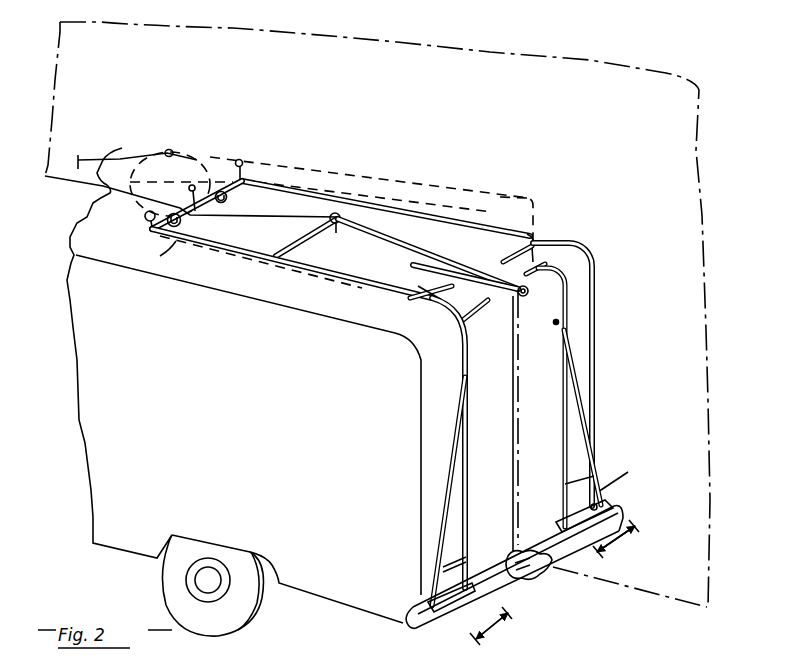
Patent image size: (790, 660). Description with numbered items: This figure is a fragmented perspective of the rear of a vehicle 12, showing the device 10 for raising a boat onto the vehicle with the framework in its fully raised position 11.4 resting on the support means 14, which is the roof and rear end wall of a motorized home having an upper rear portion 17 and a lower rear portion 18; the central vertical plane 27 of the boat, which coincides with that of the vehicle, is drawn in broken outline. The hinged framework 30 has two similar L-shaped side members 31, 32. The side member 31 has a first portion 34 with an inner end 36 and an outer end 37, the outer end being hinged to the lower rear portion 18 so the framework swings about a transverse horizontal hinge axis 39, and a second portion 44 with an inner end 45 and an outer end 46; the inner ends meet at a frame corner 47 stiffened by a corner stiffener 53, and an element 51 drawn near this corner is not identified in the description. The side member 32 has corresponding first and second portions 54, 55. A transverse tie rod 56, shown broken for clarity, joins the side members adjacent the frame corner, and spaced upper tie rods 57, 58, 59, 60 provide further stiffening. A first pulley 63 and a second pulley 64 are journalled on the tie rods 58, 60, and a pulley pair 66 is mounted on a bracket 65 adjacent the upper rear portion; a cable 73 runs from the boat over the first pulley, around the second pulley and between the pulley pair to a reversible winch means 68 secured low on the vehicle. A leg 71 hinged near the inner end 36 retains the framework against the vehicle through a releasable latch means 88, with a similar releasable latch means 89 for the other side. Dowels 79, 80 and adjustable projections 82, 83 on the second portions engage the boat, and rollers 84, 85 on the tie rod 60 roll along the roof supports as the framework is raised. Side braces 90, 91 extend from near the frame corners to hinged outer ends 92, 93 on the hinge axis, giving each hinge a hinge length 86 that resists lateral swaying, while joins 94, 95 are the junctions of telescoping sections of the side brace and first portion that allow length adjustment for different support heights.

The device 10 is at (608, 293).
The fully raised position of the boat 11.4 is at (446, 187).
The vehicle 12 is at (108, 426).
The support means 14 is at (290, 303).
The upper rear portion 17 is at (578, 263).
The lower rear portion 18 is at (608, 491).
The central vertical plane 27 is at (589, 83).
The hinged framework 30 is at (608, 373).
The side member 31 is at (460, 398).
The side member 32 is at (569, 325).
The first portion 34 is at (469, 468).
The inner end 36 is at (469, 351).
The outer end 37 is at (466, 562).
The hinge axis 39 is at (397, 622).
The second portion 44 is at (348, 289).
The inner end 45 is at (388, 295).
The outer end 46 is at (156, 237).
The frame corner 47 is at (470, 326).
The pivot link 51 is at (446, 320).
The corner stiffener 53 is at (420, 312).
The first portion 54 is at (566, 503).
The second portion 55 is at (428, 228).
The transverse tie rod 56 is at (413, 266).
The second upper tie rod 57 is at (529, 292).
The third upper tie rod 58 is at (303, 256).
The fourth upper tie rod 59 is at (285, 253).
The fifth upper tie rod 60 is at (166, 255).
The first pulley 63 is at (196, 214).
The second pulley 64 is at (329, 220).
The bracket 65 is at (498, 320).
The pulley pair 66 is at (503, 263).
The reversible winch means 68 is at (530, 578).
The leg 71 is at (469, 368).
The cable 73 is at (519, 473).
The dowel 79 is at (277, 258).
The dowel 80 is at (397, 182).
The projection 82 is at (145, 224).
The projection 83 is at (248, 168).
The roller 84 is at (156, 255).
The roller 85 is at (229, 200).
The hinge length 86 is at (498, 629).
The releasable latch means 88 is at (460, 366).
The releasable latch means 89 is at (556, 324).
The side brace 90 is at (447, 483).
The side brace 91 is at (590, 426).
The outer end 92 is at (428, 602).
The outer end 93 is at (612, 507).
The join 94 is at (456, 441).
The join 95 is at (470, 437).